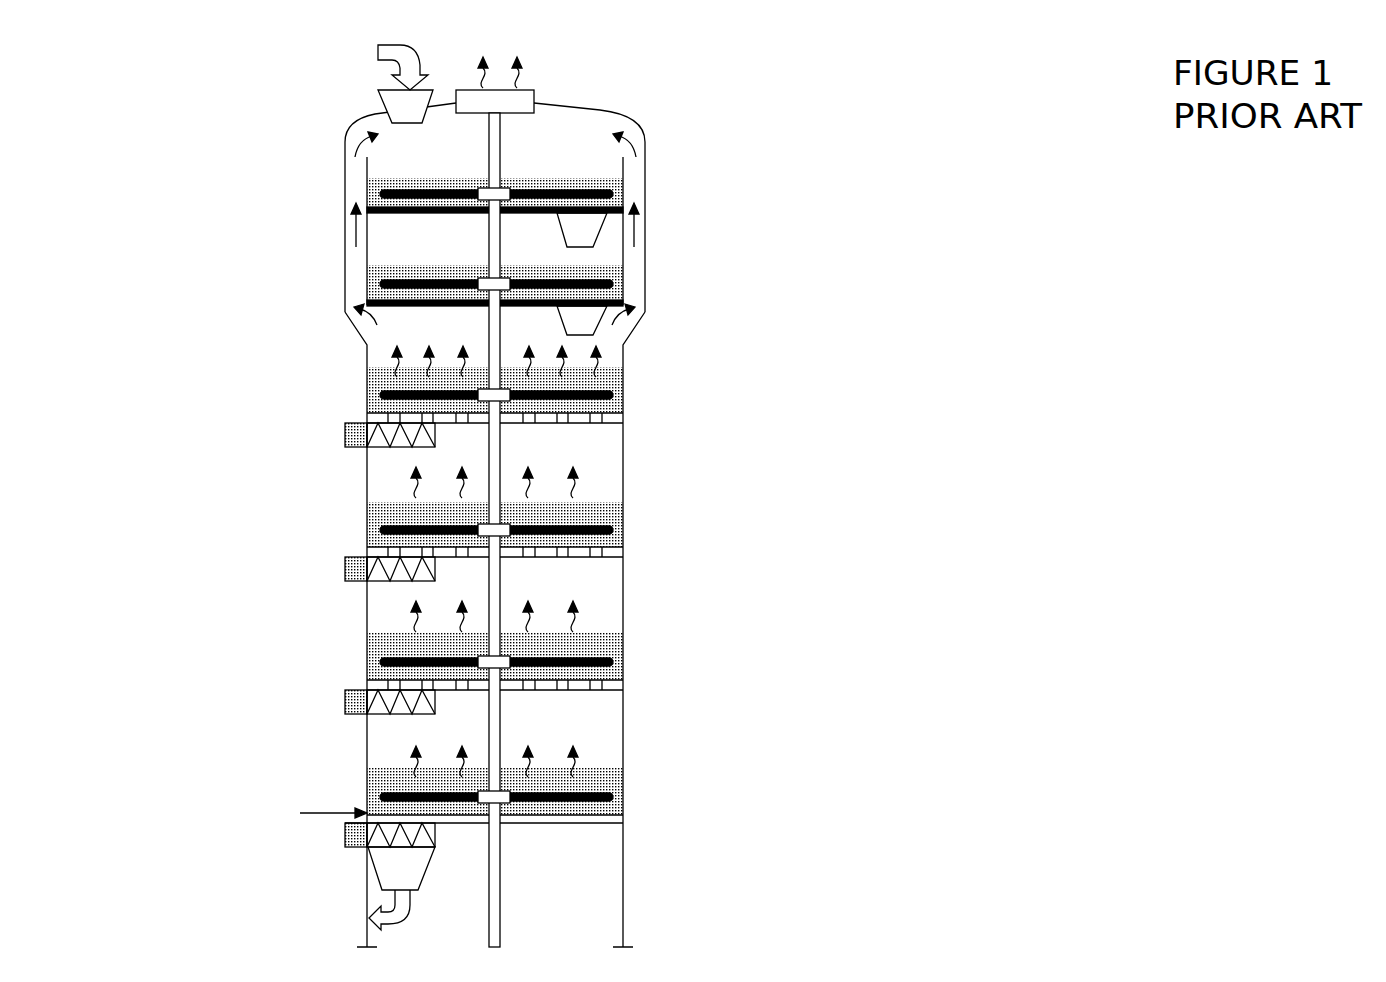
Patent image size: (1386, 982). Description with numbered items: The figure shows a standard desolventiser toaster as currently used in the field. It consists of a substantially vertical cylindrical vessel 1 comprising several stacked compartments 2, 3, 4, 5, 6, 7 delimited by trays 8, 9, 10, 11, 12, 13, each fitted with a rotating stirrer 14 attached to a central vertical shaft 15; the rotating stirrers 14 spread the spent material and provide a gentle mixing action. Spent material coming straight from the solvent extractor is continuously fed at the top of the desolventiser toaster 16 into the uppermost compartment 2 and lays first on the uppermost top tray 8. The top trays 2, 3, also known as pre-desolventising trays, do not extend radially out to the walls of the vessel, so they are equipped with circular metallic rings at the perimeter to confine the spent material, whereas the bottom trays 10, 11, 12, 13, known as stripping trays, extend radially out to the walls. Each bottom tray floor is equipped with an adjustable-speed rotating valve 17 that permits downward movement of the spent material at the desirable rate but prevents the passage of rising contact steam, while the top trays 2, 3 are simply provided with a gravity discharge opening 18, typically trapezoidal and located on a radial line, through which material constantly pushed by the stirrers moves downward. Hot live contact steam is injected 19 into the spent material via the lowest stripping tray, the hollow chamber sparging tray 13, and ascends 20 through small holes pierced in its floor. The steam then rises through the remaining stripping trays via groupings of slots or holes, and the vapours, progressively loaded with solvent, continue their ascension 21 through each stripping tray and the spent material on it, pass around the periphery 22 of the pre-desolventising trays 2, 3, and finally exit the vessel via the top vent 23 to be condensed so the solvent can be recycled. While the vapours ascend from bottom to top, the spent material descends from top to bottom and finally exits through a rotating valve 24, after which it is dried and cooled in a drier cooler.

The vertical cylindrical vessel 1 is at (593, 110).
The uppermost compartment 2 is at (583, 170).
The compartment 3 is at (590, 270).
The compartment 4 is at (597, 368).
The compartment 5 is at (577, 498).
The compartment 6 is at (582, 633).
The compartment 7 is at (580, 773).
The uppermost top tray 8 is at (623, 212).
The tray 9 is at (623, 302).
The bottom tray 10 is at (625, 418).
The bottom tray 11 is at (625, 547).
The bottom tray 12 is at (625, 685).
The sparging tray 13 is at (625, 823).
The rotating stirrer 14 is at (380, 192).
The central vertical shaft 15 is at (490, 930).
The desolventiser toaster feed 16 is at (378, 55).
The adjustable-speed rotating valve 17 is at (345, 433).
The gravity discharge opening 18 is at (578, 237).
The contact steam injection 19 is at (300, 813).
The contact steam ascent 20 is at (407, 758).
The vapour ascension 21 is at (393, 345).
The periphery 22 is at (352, 225).
The top vent 23 is at (522, 62).
The rotating valve 24 is at (370, 915).